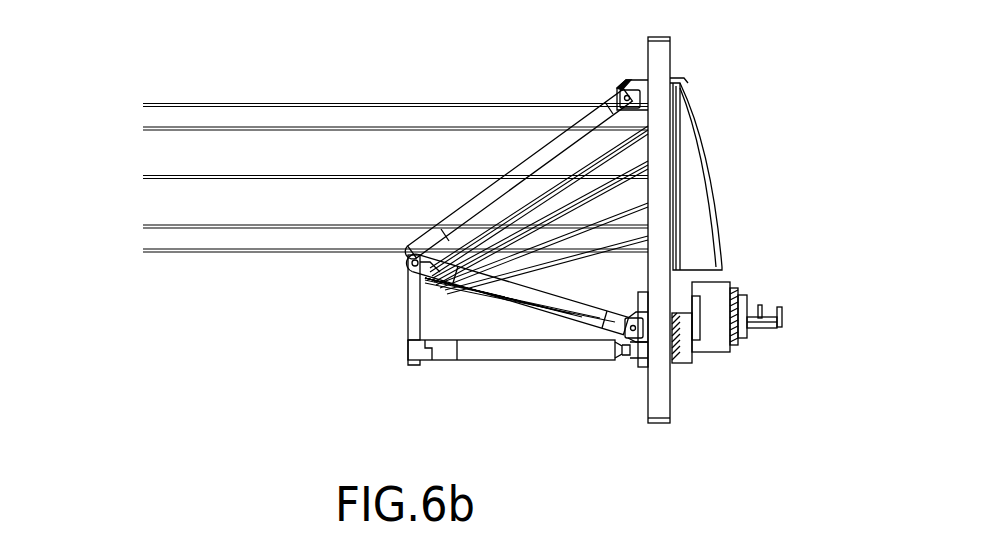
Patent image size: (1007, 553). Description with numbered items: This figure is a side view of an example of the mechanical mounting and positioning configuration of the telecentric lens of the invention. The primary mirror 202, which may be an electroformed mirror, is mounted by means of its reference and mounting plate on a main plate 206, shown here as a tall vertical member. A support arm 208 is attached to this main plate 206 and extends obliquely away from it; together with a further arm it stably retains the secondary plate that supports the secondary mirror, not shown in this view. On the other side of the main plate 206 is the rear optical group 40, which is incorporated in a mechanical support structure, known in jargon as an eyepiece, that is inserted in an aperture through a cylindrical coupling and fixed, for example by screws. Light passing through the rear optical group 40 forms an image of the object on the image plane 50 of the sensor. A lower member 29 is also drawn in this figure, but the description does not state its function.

The main plate 206 is at (647, 55).
The support arm 208 is at (517, 187).
The primary mirror 202 is at (723, 157).
The image plane 50 is at (785, 315).
The rear optical group 40 is at (760, 340).
The bottom rail 29 is at (528, 350).